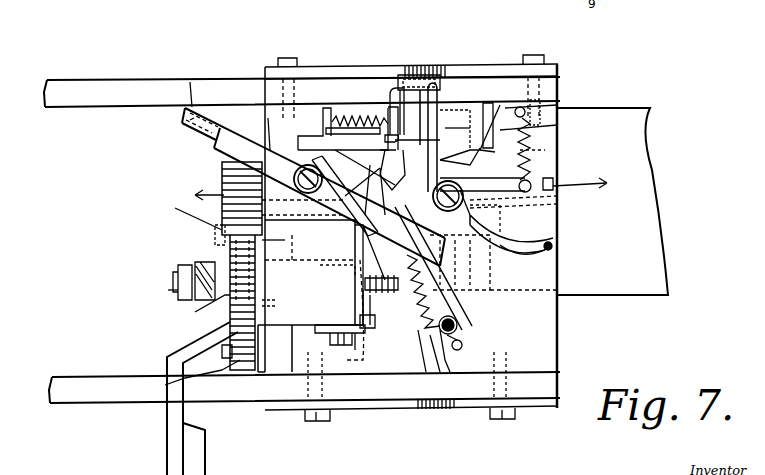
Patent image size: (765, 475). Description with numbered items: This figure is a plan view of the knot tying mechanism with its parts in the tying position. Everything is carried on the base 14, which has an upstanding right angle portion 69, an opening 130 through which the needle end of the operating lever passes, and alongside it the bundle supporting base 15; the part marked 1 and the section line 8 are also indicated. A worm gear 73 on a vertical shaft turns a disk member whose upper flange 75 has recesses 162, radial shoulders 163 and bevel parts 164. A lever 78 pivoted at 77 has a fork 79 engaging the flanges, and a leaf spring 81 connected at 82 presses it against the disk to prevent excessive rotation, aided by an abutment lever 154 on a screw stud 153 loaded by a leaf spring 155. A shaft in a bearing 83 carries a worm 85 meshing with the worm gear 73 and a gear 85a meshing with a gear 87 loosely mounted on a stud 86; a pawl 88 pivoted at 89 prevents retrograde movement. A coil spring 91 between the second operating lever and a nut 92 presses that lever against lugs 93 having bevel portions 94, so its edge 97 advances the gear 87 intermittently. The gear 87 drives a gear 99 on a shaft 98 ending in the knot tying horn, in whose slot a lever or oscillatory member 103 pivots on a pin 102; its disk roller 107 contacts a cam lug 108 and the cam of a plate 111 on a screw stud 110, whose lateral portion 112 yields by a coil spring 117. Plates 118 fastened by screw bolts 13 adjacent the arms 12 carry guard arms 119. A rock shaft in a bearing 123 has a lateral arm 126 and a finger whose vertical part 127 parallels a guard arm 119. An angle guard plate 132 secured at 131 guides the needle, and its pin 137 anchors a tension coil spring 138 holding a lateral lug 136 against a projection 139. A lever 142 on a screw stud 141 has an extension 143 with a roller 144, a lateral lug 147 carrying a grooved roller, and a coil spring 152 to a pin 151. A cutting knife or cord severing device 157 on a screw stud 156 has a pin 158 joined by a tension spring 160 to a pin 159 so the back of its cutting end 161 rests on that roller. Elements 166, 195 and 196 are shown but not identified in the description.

The stand 1 is at (88, 386).
The section line 8 is at (399, 190).
The arms 12 is at (212, 86).
The screw bolts 13 is at (289, 58).
The base 14 is at (560, 345).
The bundle supporting base 15 is at (645, 292).
The upstanding right angle portion 69 is at (285, 301).
The worm gear 73 is at (560, 145).
The upper circular flange 75 is at (545, 126).
The pivot 77 is at (556, 180).
The lever 78 is at (558, 225).
The fork 79 is at (480, 292).
The leaf spring 81 is at (532, 255).
The connection point 82 is at (553, 247).
The bearing 83 is at (311, 296).
The worm 85 is at (456, 292).
The gear 85a is at (282, 240).
The stud 86 is at (165, 292).
The gear 87 is at (235, 372).
The pawl 88 is at (195, 312).
The pivot 89 is at (310, 260).
The coil spring 91 is at (195, 265).
The nut 92 is at (178, 270).
The lugs 93 is at (177, 294).
The bevel portions 94 is at (222, 175).
The edge 97 is at (216, 236).
The shaft 98 is at (355, 235).
The gear 99 is at (225, 360).
The pin 102 is at (410, 163).
The lever or oscillatory member 103 is at (447, 152).
The disk roller 107 is at (337, 272).
The cam lug 108 is at (303, 213).
The screw stud 110 is at (376, 322).
The plate 111 is at (381, 307).
The lateral portion 112 is at (429, 351).
The coil spring 117 is at (382, 290).
The plates 118 is at (460, 66).
The guard arms 119 is at (321, 67).
The bearing 123 is at (424, 80).
The lateral arm 126 is at (405, 75).
The vertical part 127 is at (440, 88).
The opening 130 is at (490, 54).
The securing point 131 is at (312, 136).
The angle guard plate 132 is at (342, 122).
The lateral lug 136 is at (440, 75).
The pin 137 is at (330, 118).
The tension coil spring 138 is at (394, 108).
The projection 139 is at (454, 119).
The screw stud 141 is at (297, 176).
The lever 142 is at (313, 187).
The extension 143 is at (190, 137).
The roller 144 is at (190, 82).
The lateral lug 147 is at (494, 218).
The pin 151 is at (459, 349).
The coil spring 152 is at (450, 372).
The screw stud 153 is at (495, 322).
The abutment lever 154 is at (438, 375).
The leaf spring 155 is at (360, 336).
The screw stud 156 is at (453, 193).
The cutting knife or cord severing device 157 is at (531, 204).
The pin 158 is at (531, 194).
The pin 159 is at (550, 105).
The tension spring 160 is at (545, 128).
The cutting end 161 is at (384, 185).
The recesses 162 is at (495, 117).
The radial shoulders 163 is at (526, 105).
The bevel parts 164 is at (499, 125).
The link 166 is at (350, 163).
The spring 195 is at (458, 312).
The cam 196 is at (492, 216).